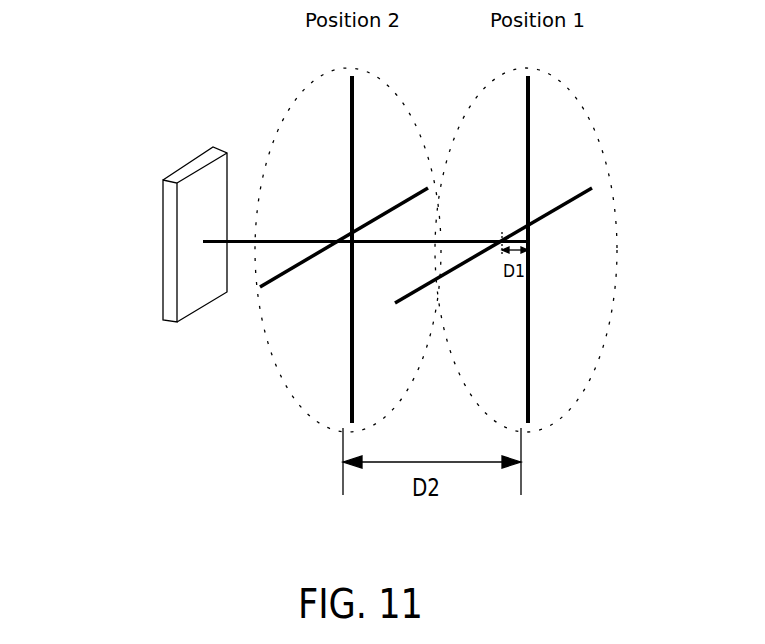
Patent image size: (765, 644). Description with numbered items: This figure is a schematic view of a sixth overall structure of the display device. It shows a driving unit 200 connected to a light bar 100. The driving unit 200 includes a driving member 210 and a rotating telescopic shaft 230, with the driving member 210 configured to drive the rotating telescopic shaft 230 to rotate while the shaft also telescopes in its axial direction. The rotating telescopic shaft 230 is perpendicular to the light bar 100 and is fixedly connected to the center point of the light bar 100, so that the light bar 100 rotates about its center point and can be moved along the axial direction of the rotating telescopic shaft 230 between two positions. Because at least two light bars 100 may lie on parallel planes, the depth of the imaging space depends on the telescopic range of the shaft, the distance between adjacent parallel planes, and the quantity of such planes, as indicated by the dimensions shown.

The light bar 100 is at (570, 206).
The driving unit 200 is at (270, 237).
The driving member 210 is at (192, 275).
The rotating telescopic shaft 230 is at (212, 242).